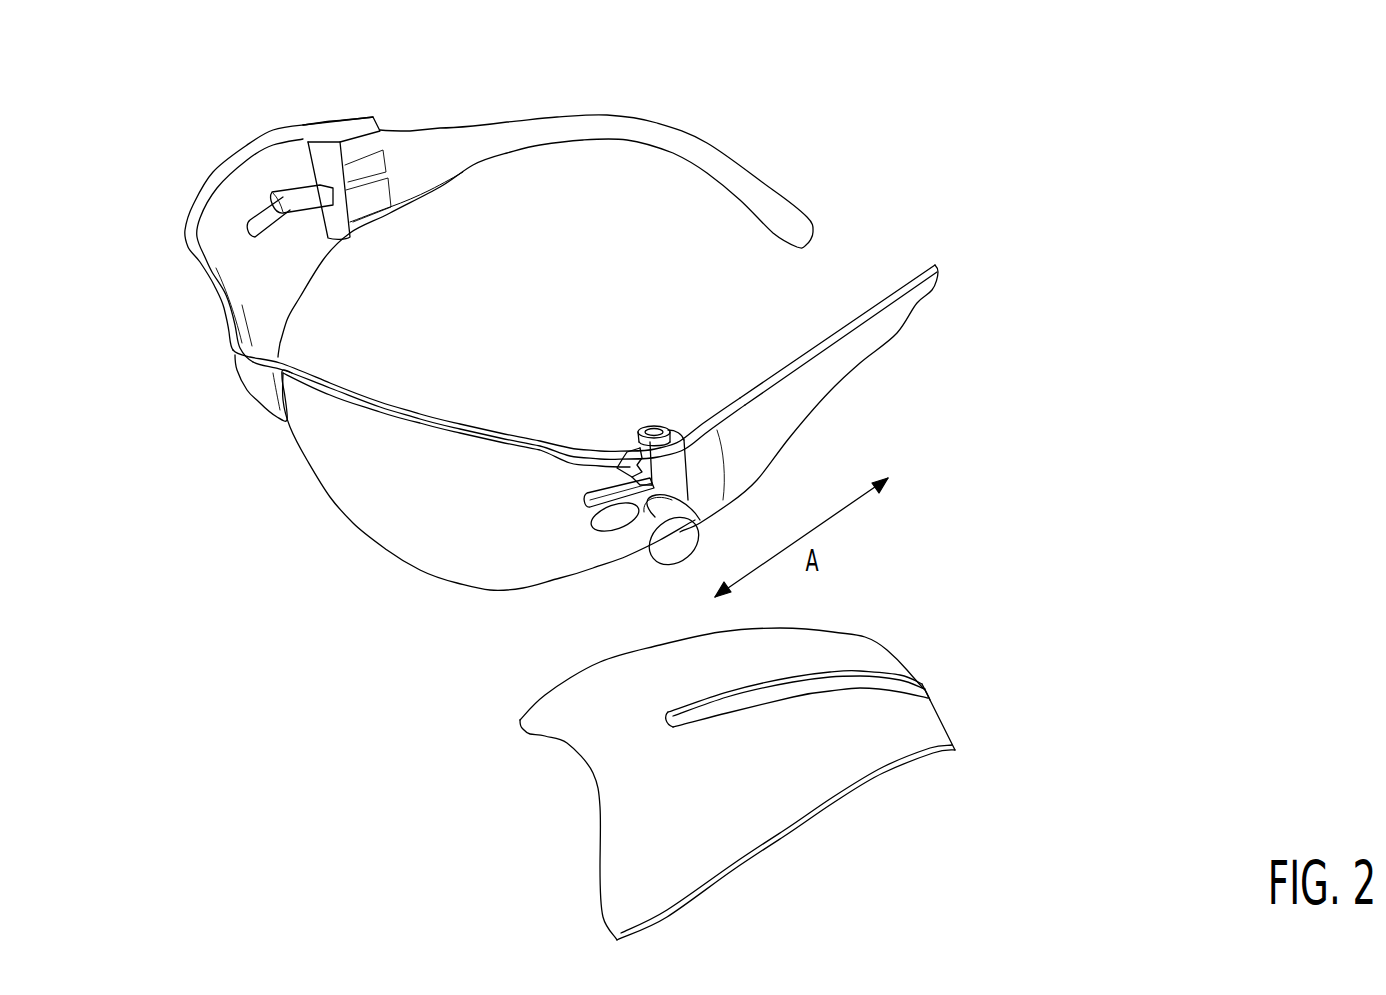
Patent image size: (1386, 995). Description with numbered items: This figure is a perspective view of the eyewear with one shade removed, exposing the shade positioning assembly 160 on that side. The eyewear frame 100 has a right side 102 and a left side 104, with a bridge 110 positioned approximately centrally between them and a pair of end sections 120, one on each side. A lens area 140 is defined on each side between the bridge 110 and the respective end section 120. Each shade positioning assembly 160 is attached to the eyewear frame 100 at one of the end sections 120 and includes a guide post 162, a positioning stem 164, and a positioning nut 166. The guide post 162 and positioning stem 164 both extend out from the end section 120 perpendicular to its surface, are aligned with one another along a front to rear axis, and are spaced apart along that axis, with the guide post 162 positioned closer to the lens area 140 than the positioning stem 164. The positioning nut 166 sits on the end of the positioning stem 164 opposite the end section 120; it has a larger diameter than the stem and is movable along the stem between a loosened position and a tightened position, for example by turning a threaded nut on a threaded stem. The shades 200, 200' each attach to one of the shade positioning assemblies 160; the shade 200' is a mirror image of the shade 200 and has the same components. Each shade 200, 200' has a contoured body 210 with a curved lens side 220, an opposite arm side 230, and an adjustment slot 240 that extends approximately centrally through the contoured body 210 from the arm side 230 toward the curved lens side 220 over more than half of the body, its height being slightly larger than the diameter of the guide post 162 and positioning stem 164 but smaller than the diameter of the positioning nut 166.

The eyewear frame 100 is at (515, 343).
The right side 102 is at (329, 144).
The left side 104 is at (667, 445).
The bridge 110 is at (237, 355).
The end section 120 is at (307, 118).
The lens area 140 is at (367, 500).
The shade positioning assembly 160 is at (667, 489).
The guide post 162 is at (640, 520).
The positioning stem 164 is at (677, 480).
The positioning nut 166 is at (650, 540).
The shade 200 is at (328, 155).
The shade 200' is at (758, 715).
The contoured body 210 is at (715, 850).
The curved lens side 220 is at (600, 855).
The arm side 230 is at (928, 730).
The adjustment slot 240 is at (887, 662).